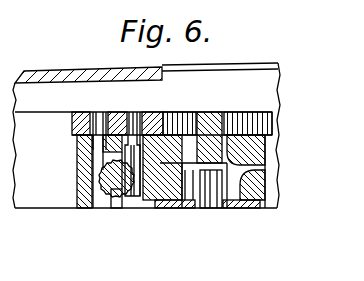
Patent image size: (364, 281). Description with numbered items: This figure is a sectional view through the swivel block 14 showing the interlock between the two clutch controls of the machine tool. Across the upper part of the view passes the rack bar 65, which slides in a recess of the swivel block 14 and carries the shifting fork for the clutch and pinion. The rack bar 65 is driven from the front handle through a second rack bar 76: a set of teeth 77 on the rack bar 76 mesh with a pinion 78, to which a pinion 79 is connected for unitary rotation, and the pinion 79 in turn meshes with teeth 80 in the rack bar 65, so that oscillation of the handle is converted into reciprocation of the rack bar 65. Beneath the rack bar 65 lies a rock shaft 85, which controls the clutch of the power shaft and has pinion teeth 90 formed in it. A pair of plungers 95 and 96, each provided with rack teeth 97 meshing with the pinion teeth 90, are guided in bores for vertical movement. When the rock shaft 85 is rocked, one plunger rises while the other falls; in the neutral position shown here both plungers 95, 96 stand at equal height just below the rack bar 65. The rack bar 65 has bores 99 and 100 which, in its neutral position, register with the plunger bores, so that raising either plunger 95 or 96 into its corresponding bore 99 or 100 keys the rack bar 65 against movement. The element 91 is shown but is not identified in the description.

The swivel block 14 is at (160, 202).
The rack bar 65 is at (269, 117).
The rack bar 76 is at (262, 180).
The second set of teeth 77 is at (237, 197).
The pinion 78 is at (197, 198).
The pinion 79 is at (225, 110).
The teeth 80 is at (180, 110).
The rock shaft 85 is at (122, 194).
The pinion teeth 90 is at (116, 200).
The shank 91 is at (118, 192).
The plunger 95 is at (99, 150).
The plunger 96 is at (141, 148).
The rack teeth 97 is at (139, 193).
The bore 99 is at (97, 115).
The bore 100 is at (135, 112).